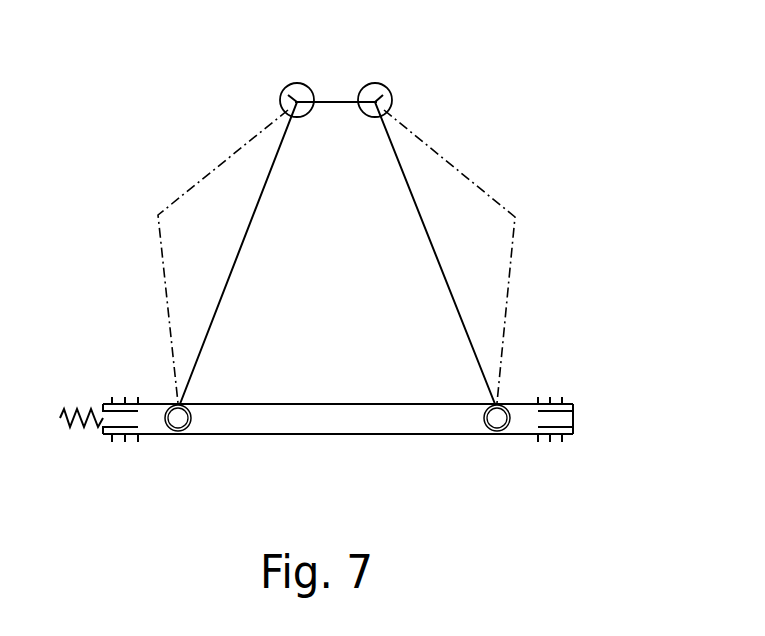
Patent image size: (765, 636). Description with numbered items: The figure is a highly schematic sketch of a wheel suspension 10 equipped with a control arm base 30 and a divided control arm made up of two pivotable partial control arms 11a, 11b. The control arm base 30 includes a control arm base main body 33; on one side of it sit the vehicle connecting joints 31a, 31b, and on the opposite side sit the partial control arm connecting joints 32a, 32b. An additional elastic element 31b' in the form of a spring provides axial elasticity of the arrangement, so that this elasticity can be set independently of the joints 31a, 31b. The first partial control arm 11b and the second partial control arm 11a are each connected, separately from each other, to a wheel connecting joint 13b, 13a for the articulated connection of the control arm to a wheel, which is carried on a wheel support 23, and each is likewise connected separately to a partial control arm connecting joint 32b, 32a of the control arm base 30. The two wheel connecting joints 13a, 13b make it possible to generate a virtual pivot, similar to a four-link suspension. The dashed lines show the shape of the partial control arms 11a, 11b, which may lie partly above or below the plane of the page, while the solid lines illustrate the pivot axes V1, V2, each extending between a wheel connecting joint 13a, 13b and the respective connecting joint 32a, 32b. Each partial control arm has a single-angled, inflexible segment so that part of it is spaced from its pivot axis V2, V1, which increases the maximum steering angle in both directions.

The lifting device 10 is at (590, 192).
The second partial control arm 11a is at (472, 172).
The first partial control arm 11b is at (205, 175).
The wheel connecting joint 13a is at (388, 92).
The wheel connecting joint 13b is at (285, 92).
The wheel support 23 is at (332, 100).
The control arm base 30 is at (277, 404).
The vehicle connecting joint 31a is at (570, 402).
The vehicle connecting joint 31b is at (83, 384).
The elastic element 31b' is at (75, 458).
The partial control arm connecting joint 32a is at (500, 405).
The partial control arm connecting joint 32b is at (178, 405).
The control arm base main body 33 is at (577, 420).
The pivot axis V1 is at (450, 295).
The pivot axis V2 is at (233, 263).